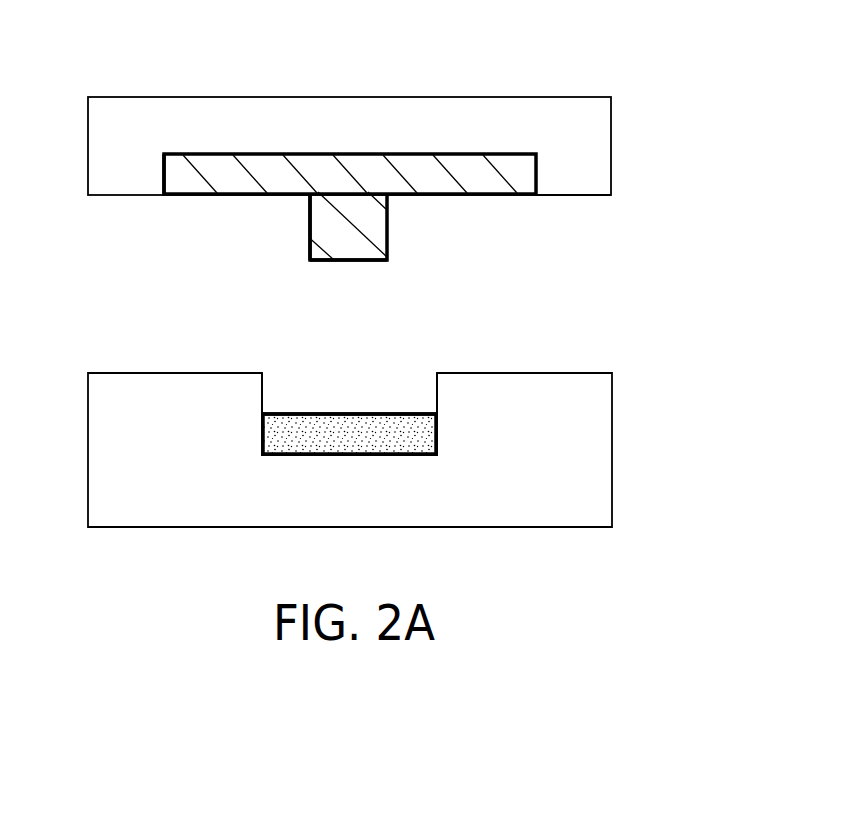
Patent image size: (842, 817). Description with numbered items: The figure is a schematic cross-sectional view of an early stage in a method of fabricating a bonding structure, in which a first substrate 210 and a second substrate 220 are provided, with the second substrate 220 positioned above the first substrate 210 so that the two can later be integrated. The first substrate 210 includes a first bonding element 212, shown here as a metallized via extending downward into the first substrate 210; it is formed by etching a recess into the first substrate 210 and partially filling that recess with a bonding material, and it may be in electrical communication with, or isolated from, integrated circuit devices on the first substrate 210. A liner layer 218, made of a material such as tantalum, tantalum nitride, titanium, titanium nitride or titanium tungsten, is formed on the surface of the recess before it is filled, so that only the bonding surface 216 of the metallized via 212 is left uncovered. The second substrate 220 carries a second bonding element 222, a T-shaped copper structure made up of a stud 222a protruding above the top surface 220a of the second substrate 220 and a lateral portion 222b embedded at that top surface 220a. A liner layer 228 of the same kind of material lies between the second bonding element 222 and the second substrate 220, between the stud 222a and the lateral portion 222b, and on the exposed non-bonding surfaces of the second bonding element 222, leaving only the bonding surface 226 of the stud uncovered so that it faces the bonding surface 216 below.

The first substrate 210 is at (547, 462).
The first bonding element 212 is at (283, 435).
The bonding surface 216 is at (357, 413).
The liner layer 218 is at (437, 435).
The second substrate 220 is at (565, 120).
The top surface 220a is at (562, 196).
The second bonding element 222 is at (474, 206).
The stud 222a is at (373, 231).
The lateral portion 222b is at (495, 178).
The bonding surface 226 is at (358, 263).
The liner layer 228 is at (213, 195).